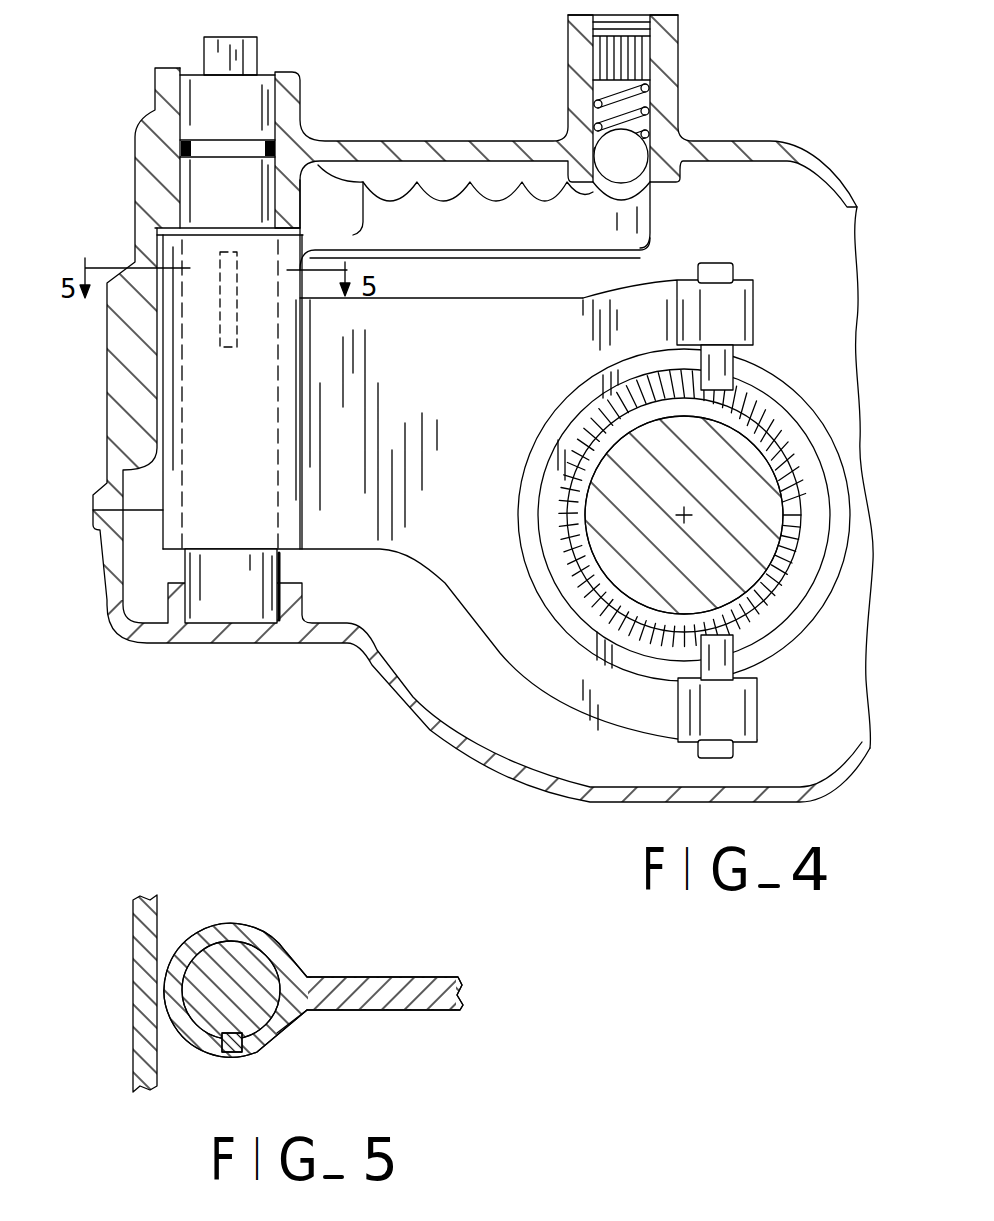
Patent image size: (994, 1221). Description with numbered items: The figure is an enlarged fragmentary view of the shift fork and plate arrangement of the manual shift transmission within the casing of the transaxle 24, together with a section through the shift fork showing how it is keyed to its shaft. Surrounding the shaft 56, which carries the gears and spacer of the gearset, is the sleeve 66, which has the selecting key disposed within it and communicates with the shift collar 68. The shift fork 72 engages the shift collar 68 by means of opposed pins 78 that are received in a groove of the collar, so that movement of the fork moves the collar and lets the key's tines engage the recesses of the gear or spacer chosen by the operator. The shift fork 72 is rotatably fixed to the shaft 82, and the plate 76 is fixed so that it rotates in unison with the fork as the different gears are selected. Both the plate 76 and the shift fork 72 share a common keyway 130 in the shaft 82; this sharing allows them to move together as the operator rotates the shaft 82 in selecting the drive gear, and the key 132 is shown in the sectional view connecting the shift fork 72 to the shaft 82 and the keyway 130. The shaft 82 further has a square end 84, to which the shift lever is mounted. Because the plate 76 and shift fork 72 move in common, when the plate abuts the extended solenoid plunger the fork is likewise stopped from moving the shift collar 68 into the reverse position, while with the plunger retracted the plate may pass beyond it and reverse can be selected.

In FIG. 4, the transaxle 24 is at (788, 76).
In FIG. 4, the shaft 56 is at (750, 527).
In FIG. 4, the sleeve 66 is at (790, 578).
In FIG. 4, the shift collar 68 is at (805, 450).
In FIG. 4, the shift fork 72 is at (652, 292).
In FIG. 5, the shift fork 72 is at (393, 985).
In FIG. 4, the plate 76 is at (492, 218).
In FIG. 4, the opposed pins 78 is at (718, 368).
In FIG. 4, the shaft 82 is at (232, 608).
In FIG. 5, the shaft 82 is at (252, 957).
In FIG. 4, the square end 84 is at (253, 54).
In FIG. 4, the common keyway 130 is at (233, 333).
In FIG. 5, the key 132 is at (230, 1055).